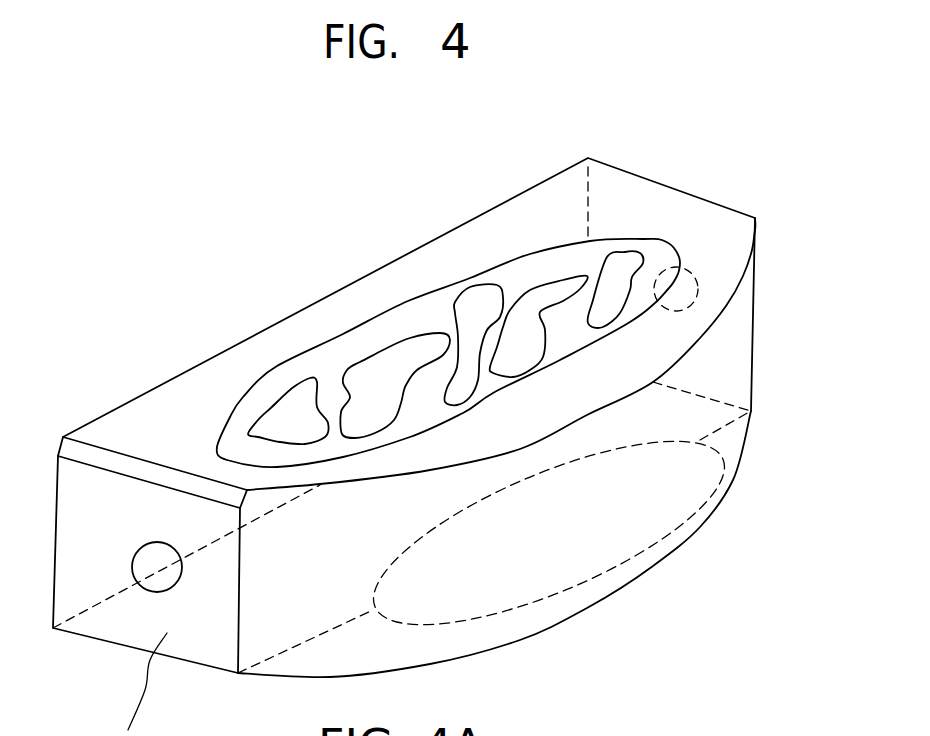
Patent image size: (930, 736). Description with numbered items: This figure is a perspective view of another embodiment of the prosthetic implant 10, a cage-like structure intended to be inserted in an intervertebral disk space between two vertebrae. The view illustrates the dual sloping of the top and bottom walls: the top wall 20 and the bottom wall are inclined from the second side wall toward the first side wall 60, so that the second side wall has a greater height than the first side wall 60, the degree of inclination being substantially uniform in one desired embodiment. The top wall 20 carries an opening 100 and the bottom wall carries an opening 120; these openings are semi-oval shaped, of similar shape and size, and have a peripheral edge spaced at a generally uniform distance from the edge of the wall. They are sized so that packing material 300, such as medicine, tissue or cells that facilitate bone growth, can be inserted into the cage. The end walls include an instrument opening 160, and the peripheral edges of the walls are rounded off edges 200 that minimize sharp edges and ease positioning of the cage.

The prosthetic implant 10 is at (290, 272).
The top wall 20 is at (177, 393).
The first side wall 60 is at (740, 357).
The opening 100 is at (453, 297).
The opening 120 is at (568, 542).
The instrument opening 160 is at (150, 562).
The rounded off edges 200 is at (77, 452).
The packing material 300 is at (382, 362).